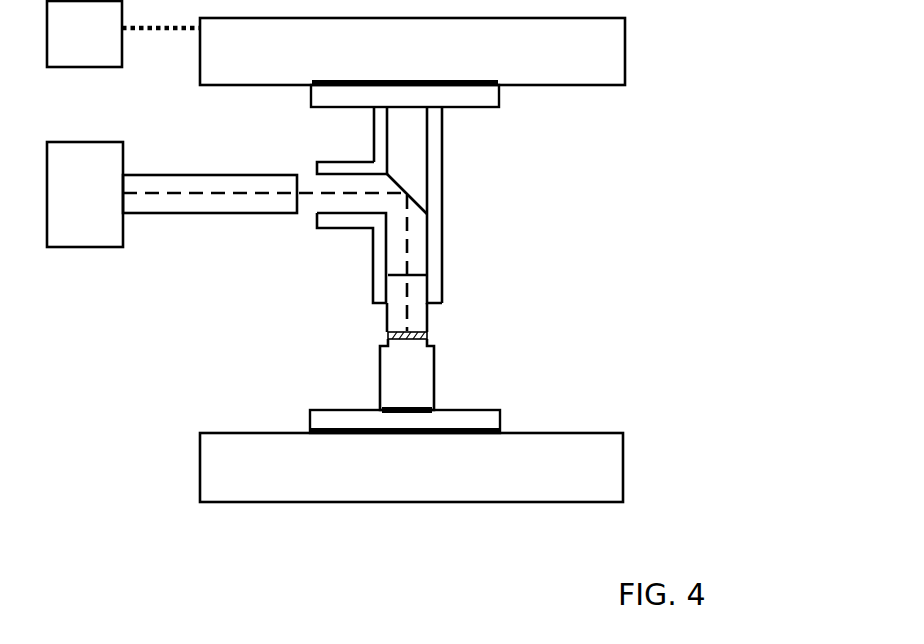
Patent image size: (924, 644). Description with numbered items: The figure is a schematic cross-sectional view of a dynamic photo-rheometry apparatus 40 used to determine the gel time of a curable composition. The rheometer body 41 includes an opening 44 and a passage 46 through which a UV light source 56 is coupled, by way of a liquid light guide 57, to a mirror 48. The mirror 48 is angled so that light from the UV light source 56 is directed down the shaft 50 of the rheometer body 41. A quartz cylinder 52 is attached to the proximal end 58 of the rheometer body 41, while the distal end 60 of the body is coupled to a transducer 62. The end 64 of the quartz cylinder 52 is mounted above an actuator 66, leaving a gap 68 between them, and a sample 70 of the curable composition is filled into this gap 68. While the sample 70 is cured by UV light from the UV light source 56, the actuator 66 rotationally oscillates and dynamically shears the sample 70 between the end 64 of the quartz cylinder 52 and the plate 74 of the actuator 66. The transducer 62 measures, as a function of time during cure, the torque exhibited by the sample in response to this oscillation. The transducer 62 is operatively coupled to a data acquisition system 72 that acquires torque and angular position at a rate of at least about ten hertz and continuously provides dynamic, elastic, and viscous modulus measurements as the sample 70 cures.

The photo-rheometry apparatus 40 is at (726, 98).
The rheometer body 41 is at (441, 145).
The opening 44 is at (313, 207).
The passage 46 is at (353, 185).
The mirror 48 is at (403, 186).
The shaft 50 is at (415, 245).
The quartz cylinder 52 is at (393, 314).
The UV light source 56 is at (70, 205).
The liquid light guide 57 is at (168, 213).
The proximal end 58 is at (435, 298).
The distal end 60 is at (378, 115).
The transducer 62 is at (562, 68).
The end of the quartz cylinder 64 is at (413, 326).
The actuator 66 is at (470, 427).
The gap 68 is at (366, 336).
The sample 70 is at (428, 338).
The data acquisition system 72 is at (96, 47).
The plate 74 is at (402, 348).